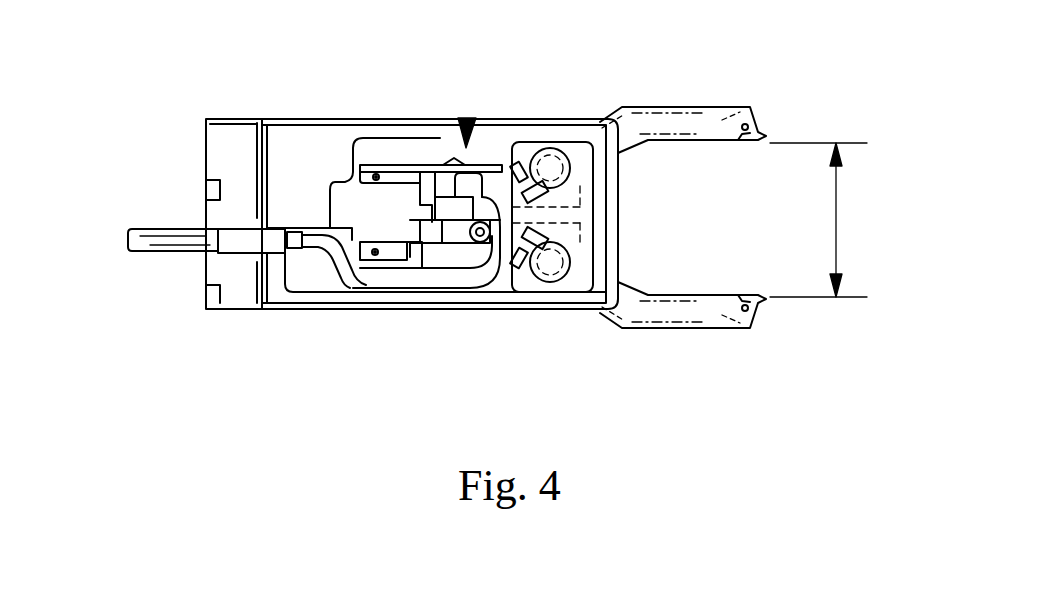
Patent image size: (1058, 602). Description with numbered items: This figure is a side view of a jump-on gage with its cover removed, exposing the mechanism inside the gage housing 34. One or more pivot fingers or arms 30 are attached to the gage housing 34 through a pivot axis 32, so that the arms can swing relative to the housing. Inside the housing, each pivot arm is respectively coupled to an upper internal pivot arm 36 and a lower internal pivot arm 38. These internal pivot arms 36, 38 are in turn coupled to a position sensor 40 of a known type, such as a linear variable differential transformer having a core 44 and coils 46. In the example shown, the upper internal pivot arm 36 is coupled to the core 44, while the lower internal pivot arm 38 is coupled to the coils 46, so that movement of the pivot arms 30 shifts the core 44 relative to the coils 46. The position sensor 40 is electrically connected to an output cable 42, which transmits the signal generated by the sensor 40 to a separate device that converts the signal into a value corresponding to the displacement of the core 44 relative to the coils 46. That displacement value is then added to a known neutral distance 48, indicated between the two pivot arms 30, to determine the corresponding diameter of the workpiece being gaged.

The pivot arm 30 is at (680, 122).
The pivot axis 32 is at (551, 155).
The gage housing 34 is at (290, 118).
The upper internal pivot arm 36 is at (477, 167).
The lower internal pivot arm 38 is at (460, 272).
The position sensor 40 is at (468, 118).
The output cable 42 is at (328, 268).
The core 44 is at (450, 190).
The coils 46 is at (407, 267).
The neutral distance 48 is at (837, 220).